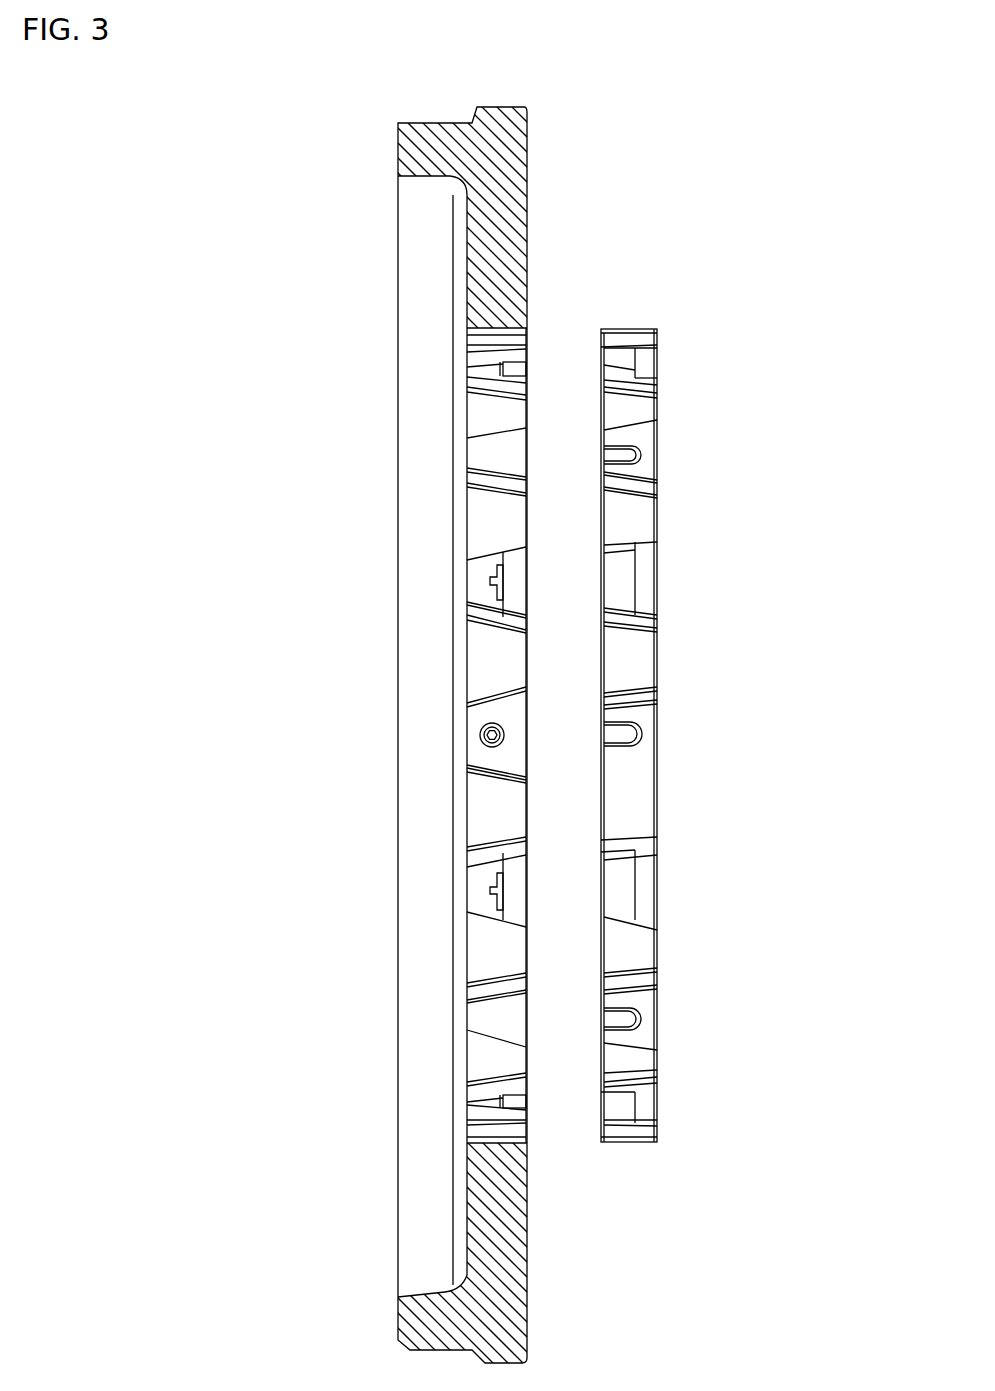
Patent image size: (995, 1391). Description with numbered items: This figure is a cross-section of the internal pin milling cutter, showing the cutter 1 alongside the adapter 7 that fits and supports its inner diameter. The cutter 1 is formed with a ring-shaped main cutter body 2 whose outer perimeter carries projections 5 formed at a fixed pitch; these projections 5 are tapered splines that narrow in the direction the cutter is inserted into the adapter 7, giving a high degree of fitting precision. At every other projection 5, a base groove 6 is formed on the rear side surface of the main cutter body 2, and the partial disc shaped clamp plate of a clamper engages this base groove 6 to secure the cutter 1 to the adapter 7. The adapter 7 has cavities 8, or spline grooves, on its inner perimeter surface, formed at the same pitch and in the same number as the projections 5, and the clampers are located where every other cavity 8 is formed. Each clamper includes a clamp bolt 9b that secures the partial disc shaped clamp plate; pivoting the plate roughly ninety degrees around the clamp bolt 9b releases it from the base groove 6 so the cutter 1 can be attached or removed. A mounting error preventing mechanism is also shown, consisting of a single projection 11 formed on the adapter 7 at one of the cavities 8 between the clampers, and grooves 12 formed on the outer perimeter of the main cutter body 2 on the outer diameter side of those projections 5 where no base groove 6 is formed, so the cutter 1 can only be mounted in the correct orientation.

The cutter 1 is at (649, 686).
The main cutter body 2 is at (628, 329).
The projections 5 is at (618, 583).
The base groove 6 is at (640, 588).
The adapter 7 is at (528, 214).
The cavities 8 is at (486, 752).
The clamp bolt 9b is at (518, 580).
The projection 11 is at (482, 728).
The grooves 12 is at (614, 453).